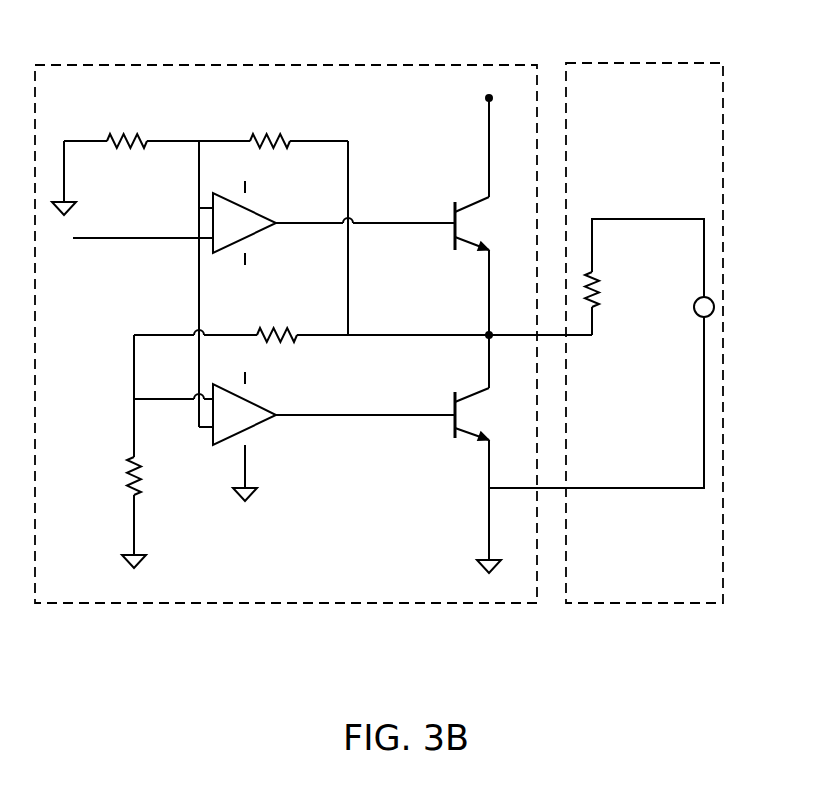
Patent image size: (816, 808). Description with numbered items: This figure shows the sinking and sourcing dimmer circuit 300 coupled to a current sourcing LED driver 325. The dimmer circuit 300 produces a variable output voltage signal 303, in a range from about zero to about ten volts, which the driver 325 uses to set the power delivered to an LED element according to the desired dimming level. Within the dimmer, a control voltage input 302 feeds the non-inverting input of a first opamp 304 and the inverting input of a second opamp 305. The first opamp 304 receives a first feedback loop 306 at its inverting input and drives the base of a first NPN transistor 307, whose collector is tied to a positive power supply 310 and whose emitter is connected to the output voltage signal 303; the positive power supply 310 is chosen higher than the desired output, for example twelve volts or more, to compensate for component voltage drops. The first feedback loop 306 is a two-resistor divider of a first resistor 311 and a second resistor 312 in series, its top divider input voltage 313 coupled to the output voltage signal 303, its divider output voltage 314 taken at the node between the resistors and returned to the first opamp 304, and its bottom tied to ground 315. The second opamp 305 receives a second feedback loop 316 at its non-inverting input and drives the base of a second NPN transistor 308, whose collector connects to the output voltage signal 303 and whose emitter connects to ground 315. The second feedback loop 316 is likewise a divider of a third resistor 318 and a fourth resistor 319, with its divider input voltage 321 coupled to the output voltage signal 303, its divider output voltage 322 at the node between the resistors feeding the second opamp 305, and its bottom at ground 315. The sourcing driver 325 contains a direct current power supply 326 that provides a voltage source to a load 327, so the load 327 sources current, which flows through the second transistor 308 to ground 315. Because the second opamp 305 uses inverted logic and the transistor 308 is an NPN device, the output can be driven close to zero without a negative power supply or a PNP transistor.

The dimmer circuit 300 is at (137, 65).
The sourcing LED driver 325 is at (680, 63).
The control voltage input Vin 302 is at (62, 262).
The output voltage signal Vout 303 is at (446, 324).
The first opamp 304 is at (258, 232).
The second opamp 305 is at (258, 427).
The first feedback loop 306 is at (350, 197).
The first NPN transistor 307 is at (473, 246).
The second NPN transistor 308 is at (473, 441).
The positive power supply Vpos 310 is at (468, 92).
The first resistor 311 is at (295, 136).
The second resistor 312 is at (150, 136).
The divider input voltage Vdin 313 is at (350, 141).
The divider output voltage Vdout 314 is at (200, 136).
The ground 315 is at (78, 208).
The second feedback loop 316 is at (128, 360).
The third resistor 318 is at (295, 340).
The fourth resistor 319 is at (150, 475).
The divider input voltage Vdin 321 is at (349, 338).
The divider output voltage Vdout 322 is at (127, 400).
The DC power supply 326 is at (700, 319).
The load 327 is at (608, 273).